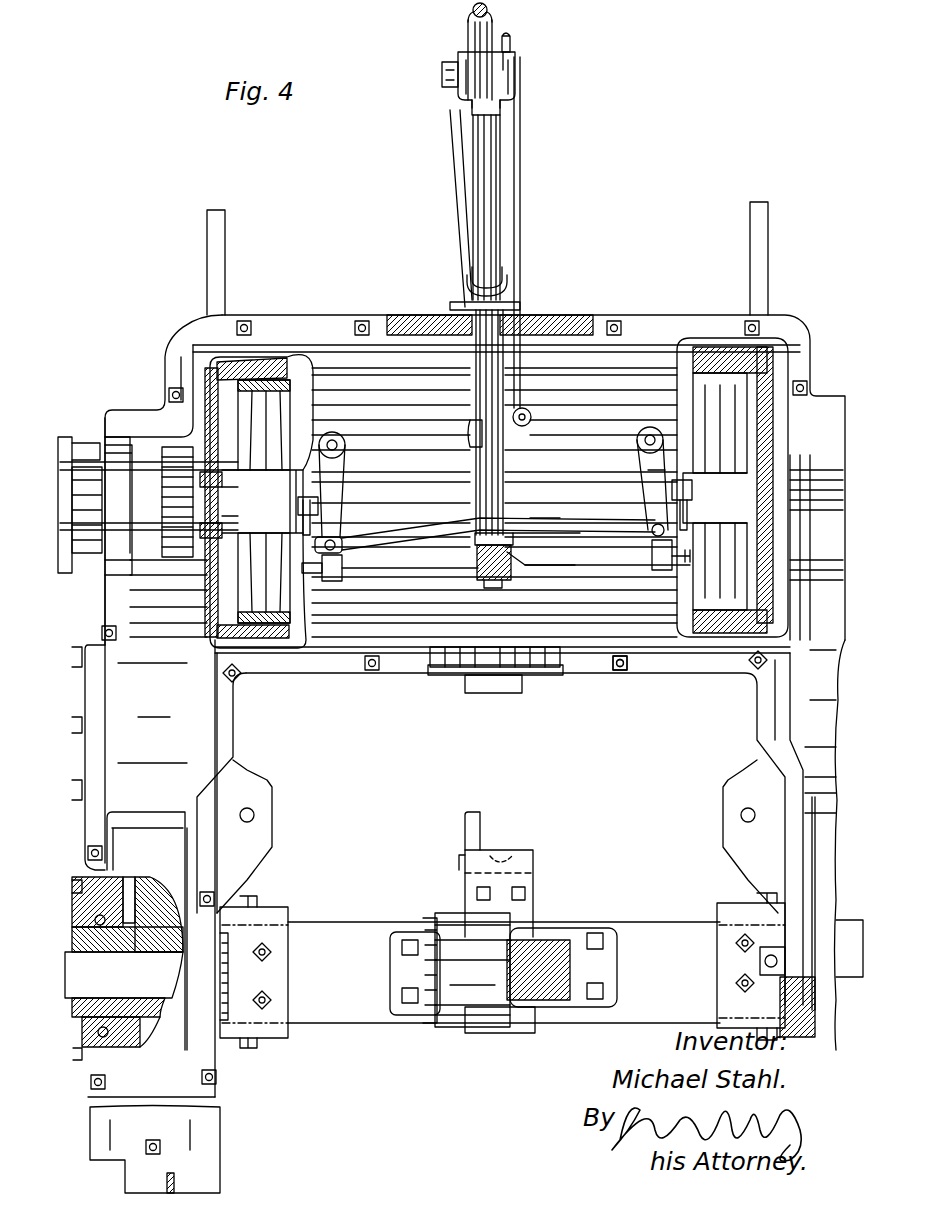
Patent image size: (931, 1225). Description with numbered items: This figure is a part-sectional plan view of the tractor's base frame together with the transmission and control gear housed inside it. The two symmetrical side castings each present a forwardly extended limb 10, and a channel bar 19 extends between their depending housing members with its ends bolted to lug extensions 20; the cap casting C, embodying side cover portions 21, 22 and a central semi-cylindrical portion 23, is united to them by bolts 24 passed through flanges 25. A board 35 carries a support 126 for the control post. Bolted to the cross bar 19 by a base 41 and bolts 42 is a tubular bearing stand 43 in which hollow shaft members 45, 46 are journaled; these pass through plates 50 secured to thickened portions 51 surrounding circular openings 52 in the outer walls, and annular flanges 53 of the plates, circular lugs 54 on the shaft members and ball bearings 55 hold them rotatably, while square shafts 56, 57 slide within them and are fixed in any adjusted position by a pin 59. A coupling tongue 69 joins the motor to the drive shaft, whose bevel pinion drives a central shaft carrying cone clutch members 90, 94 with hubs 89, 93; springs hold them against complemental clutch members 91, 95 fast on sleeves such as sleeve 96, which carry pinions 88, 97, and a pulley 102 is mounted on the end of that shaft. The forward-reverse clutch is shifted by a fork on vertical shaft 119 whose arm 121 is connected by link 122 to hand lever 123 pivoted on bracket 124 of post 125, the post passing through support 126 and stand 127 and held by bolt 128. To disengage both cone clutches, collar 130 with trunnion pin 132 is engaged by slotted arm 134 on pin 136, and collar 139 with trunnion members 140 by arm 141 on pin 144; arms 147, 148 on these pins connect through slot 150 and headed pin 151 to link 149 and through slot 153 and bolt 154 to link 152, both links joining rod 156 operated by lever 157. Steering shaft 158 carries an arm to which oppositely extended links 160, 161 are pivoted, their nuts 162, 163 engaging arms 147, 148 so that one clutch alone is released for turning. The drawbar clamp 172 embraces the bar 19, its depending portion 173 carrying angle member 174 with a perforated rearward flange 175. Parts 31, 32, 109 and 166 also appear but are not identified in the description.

The forwardly extended limb 10 is at (222, 1177).
The channel bar 19 is at (600, 922).
The lug extensions 20 is at (265, 916).
The side cover portion 21 is at (786, 711).
The side cover portion 22 is at (203, 730).
The central semi-cylindrical portion 23 is at (586, 632).
The bolts 24 is at (618, 672).
The flanges 25 is at (697, 316).
The right bracket lug 31 is at (728, 768).
The left bracket lug 32 is at (253, 778).
The board 35 is at (546, 314).
The base 41 is at (580, 1003).
The bolts 42 is at (413, 1005).
The tubular bearing stand 43 is at (458, 1020).
The shaft member 45 is at (846, 922).
The shaft member 46 is at (228, 1040).
The plates 50 is at (124, 975).
The thickened portions 51 is at (104, 862).
The circular opening 52 is at (128, 875).
The annular flanges 53 is at (118, 880).
The circular lugs 54 is at (149, 883).
The ball bearings 55 is at (108, 1032).
The square shaft 56 is at (762, 958).
The square shaft 57 is at (170, 1002).
The pin 59 is at (764, 962).
The second tongue 69 is at (497, 690).
The pinion 88 is at (803, 473).
The hub 89 is at (708, 465).
The cone clutch member 90 is at (779, 333).
The complemental clutch member 91 is at (741, 350).
The hub 93 is at (273, 467).
The cone clutch member 94 is at (290, 378).
The complemental clutch member 95 is at (269, 360).
The sleeve 96 is at (188, 441).
The pinion 97 is at (162, 457).
The pulley 102 is at (65, 440).
The right upright 109 is at (797, 604).
The vertical shaft 119 is at (505, 436).
The arm 121 is at (532, 424).
The link 122 is at (522, 226).
The hand lever 123 is at (512, 40).
The bracket 124 is at (500, 78).
The post 125 is at (499, 162).
The support 126 is at (506, 288).
The stand 127 is at (516, 553).
The bolt 128 is at (478, 560).
The collar 130 is at (309, 607).
The trunnion pin 132 is at (348, 508).
The arm 134 is at (345, 480).
The pin 136 is at (341, 447).
The collar 139 is at (652, 558).
The trunnion members 140 is at (672, 490).
The arm 141 is at (675, 435).
The pin 144 is at (640, 437).
The arm 147 is at (651, 473).
The arm 148 is at (336, 521).
The link 149 is at (543, 524).
The slot 150 is at (652, 530).
The headed pin 151 is at (660, 520).
The link 152 is at (437, 528).
The slot 153 is at (348, 547).
The bolt 154 is at (366, 560).
The rod 156 is at (456, 202).
The lever 157 is at (455, 104).
The shaft 158 is at (470, 12).
The link 160 is at (572, 565).
The link 161 is at (462, 575).
The nut 162 is at (684, 562).
The nut 163 is at (331, 582).
The terminal post 166 is at (226, 243).
The clamp 172 is at (520, 915).
The depending portion 173 is at (462, 862).
The angle member 174 is at (476, 853).
The rearwardly extended flange 175 is at (481, 824).
The cap member C is at (631, 350).